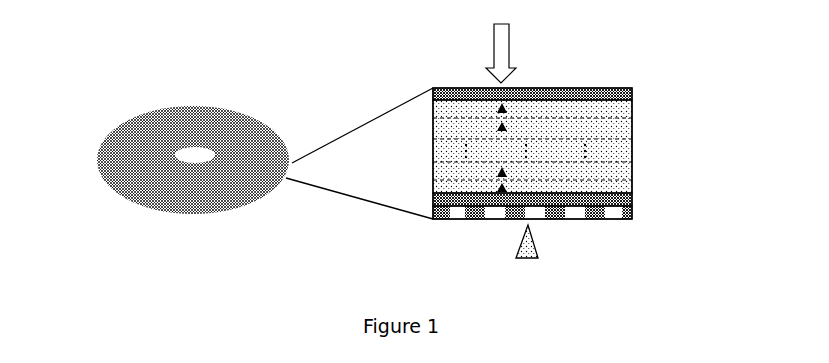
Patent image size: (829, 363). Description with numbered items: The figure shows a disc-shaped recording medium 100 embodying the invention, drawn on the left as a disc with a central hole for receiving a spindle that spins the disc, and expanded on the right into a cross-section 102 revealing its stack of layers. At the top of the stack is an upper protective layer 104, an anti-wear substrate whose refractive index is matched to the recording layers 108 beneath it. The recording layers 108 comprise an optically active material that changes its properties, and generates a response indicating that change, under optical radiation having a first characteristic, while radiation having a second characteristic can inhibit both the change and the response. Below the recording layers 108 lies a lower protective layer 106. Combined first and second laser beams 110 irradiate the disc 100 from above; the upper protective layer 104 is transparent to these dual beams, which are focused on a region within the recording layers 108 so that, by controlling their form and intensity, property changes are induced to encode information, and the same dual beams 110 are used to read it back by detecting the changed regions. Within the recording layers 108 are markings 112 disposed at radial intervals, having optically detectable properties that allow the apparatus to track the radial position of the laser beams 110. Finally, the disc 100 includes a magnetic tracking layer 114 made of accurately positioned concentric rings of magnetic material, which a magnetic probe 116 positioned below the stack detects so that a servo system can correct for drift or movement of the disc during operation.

The disc-shaped recording medium 100 is at (108, 105).
The cross-section 102 is at (684, 69).
The upper protective layer 104 is at (626, 95).
The lower protective layer 106 is at (610, 196).
The recording layers 108 is at (619, 150).
The combined first and second laser beams 110 is at (496, 51).
The markings 112 is at (502, 109).
The magnetic tracking layer 114 is at (626, 212).
The magnetic probe 116 is at (544, 240).